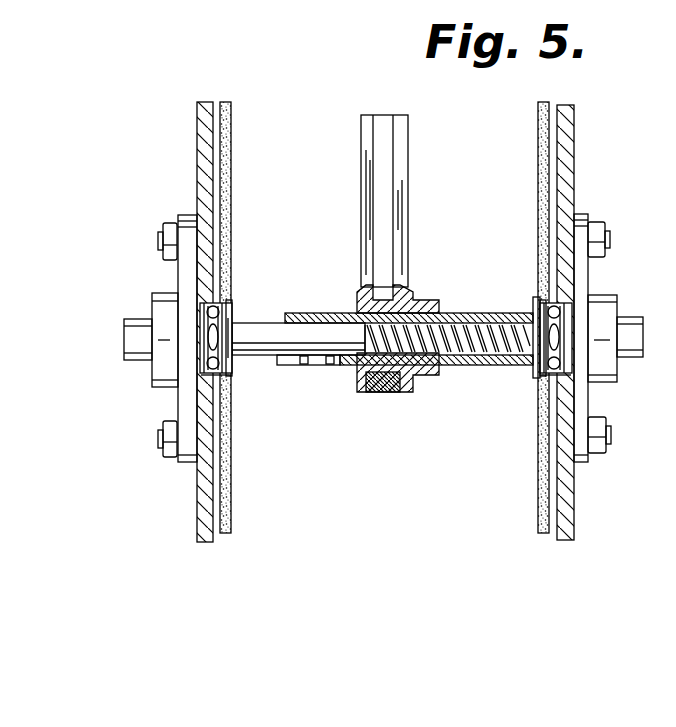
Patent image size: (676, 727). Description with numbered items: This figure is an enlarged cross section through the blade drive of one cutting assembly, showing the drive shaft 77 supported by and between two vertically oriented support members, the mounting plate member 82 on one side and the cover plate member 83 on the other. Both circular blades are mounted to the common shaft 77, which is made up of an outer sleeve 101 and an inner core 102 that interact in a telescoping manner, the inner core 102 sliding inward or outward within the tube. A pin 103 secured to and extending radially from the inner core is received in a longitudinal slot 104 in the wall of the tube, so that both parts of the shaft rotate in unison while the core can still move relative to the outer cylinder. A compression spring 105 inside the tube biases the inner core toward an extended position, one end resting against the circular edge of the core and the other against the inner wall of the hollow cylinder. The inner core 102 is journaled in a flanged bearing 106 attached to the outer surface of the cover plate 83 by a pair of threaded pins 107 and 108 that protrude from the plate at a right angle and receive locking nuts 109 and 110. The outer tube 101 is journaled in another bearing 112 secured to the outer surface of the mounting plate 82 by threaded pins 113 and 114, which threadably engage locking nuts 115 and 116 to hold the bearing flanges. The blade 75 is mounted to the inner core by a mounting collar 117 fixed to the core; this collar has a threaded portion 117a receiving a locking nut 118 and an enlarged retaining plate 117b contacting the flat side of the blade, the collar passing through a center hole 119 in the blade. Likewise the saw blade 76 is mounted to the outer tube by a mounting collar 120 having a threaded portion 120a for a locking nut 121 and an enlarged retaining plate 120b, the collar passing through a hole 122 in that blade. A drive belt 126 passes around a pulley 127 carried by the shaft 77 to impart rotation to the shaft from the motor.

The blade 75 is at (232, 177).
The saw blade 76 is at (540, 164).
The drive shaft 77 is at (462, 312).
The mounting plate member 82 is at (577, 127).
The cover plate member 83 is at (197, 117).
The outer sleeve 101 is at (458, 368).
The inner core 102 is at (258, 357).
The pin 103 is at (333, 372).
The longitudinal slot 104 is at (302, 372).
The compression spring 105 is at (498, 358).
The bearing 106 is at (154, 381).
The threaded pin 107 is at (158, 448).
The threaded pin 108 is at (158, 240).
The locking nut 109 is at (166, 455).
The locking nut 110 is at (172, 222).
The bearing 112 is at (618, 378).
The threaded pin 113 is at (608, 441).
The threaded pin 114 is at (609, 239).
The locking nut 115 is at (606, 455).
The locking nut 116 is at (598, 222).
The mounting collar 117 is at (232, 322).
The threaded portion 117a is at (212, 372).
The enlarged retaining plate 117b is at (233, 302).
The locking nut 118 is at (209, 310).
The center hole 119 is at (230, 318).
The mounting collar 120 is at (533, 310).
The threaded portion 120a is at (566, 340).
The enlarged retaining plate 120b is at (534, 300).
The locking nut 121 is at (577, 300).
The hole 122 is at (538, 372).
The drive belt 126 is at (362, 130).
The pulley 127 is at (357, 298).